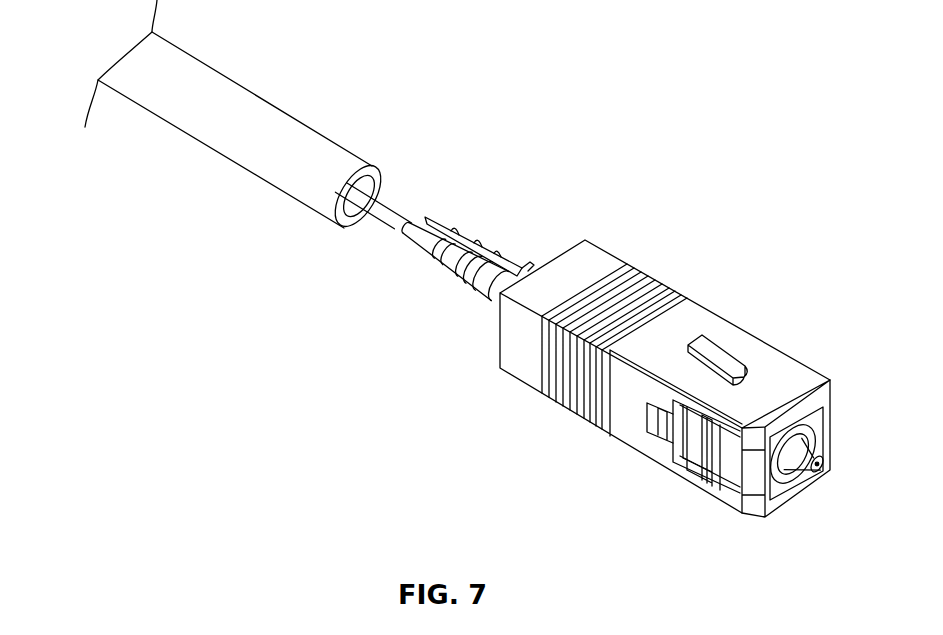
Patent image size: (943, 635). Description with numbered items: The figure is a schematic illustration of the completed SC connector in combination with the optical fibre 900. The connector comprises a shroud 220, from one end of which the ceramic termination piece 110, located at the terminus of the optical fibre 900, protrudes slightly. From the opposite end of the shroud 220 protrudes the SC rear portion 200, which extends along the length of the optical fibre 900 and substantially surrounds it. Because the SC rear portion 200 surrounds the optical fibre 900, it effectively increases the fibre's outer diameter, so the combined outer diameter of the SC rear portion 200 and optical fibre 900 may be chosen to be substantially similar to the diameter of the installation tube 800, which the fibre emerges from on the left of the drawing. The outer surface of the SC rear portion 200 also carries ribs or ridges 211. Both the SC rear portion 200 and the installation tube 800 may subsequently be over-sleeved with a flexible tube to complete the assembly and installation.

The installation tube 800 is at (261, 164).
The optical fibre 900 is at (384, 196).
The SC rear portion 200 is at (471, 277).
The ribs or ridges 211 is at (466, 240).
The shroud 220 is at (777, 362).
The termination piece 110 is at (784, 458).